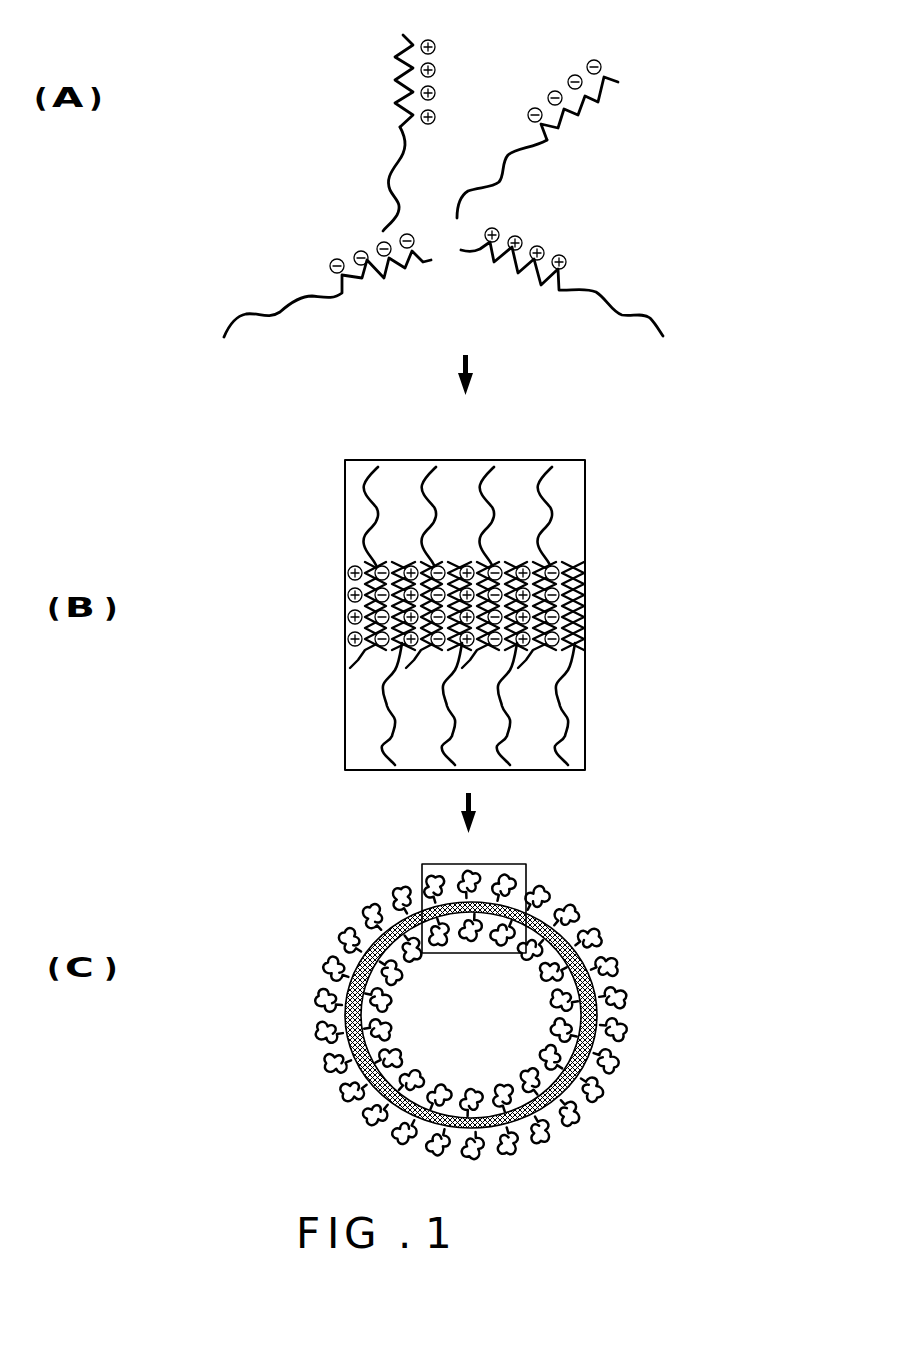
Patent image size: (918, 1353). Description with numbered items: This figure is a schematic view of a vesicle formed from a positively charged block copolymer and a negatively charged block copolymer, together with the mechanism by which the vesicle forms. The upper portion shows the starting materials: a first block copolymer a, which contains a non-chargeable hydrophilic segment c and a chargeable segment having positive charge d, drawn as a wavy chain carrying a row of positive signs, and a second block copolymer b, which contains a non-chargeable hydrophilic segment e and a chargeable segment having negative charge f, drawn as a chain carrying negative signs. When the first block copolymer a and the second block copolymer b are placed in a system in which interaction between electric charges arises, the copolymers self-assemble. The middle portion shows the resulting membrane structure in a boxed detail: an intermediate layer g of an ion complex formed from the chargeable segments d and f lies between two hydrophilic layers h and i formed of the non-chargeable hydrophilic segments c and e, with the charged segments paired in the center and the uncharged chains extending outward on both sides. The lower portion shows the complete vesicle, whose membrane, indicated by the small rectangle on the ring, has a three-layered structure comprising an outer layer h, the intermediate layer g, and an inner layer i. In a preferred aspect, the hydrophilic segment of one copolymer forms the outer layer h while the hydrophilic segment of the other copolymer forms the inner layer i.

The first block copolymer a is at (401, 29).
The second block copolymer b is at (214, 340).
The non-chargeable hydrophilic segment c is at (410, 163).
The chargeable segment having positive charge d is at (447, 82).
The non-chargeable hydrophilic segment e is at (515, 187).
The chargeable segment having negative charge f is at (598, 112).
The intermediate layer g is at (598, 657).
The outer layer h is at (598, 463).
The inner layer i is at (598, 662).